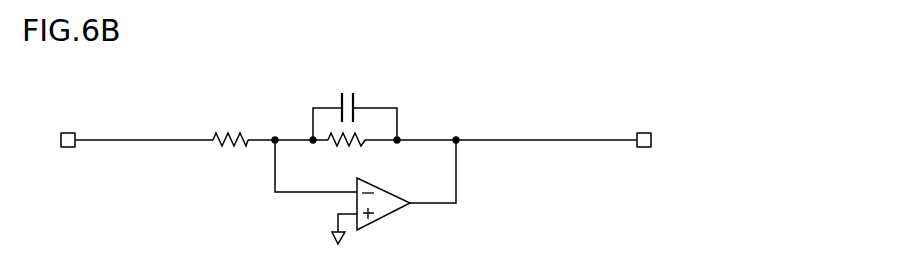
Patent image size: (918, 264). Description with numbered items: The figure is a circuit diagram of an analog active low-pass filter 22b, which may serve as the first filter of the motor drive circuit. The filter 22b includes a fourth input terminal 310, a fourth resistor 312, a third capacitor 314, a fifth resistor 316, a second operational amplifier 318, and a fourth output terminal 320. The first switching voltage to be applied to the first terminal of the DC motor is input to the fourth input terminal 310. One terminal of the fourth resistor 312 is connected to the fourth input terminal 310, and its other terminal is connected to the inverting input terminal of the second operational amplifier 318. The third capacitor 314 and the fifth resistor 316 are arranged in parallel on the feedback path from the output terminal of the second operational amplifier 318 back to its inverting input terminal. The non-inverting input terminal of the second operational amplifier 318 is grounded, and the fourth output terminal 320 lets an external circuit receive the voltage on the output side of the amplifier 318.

The analog active low-pass filter 22b is at (742, 137).
The fourth input terminal 310 is at (75, 134).
The fourth resistor 312 is at (228, 148).
The third capacitor 314 is at (350, 93).
The fifth resistor 316 is at (355, 146).
The second operational amplifier 318 is at (382, 217).
The fourth output terminal 320 is at (650, 133).